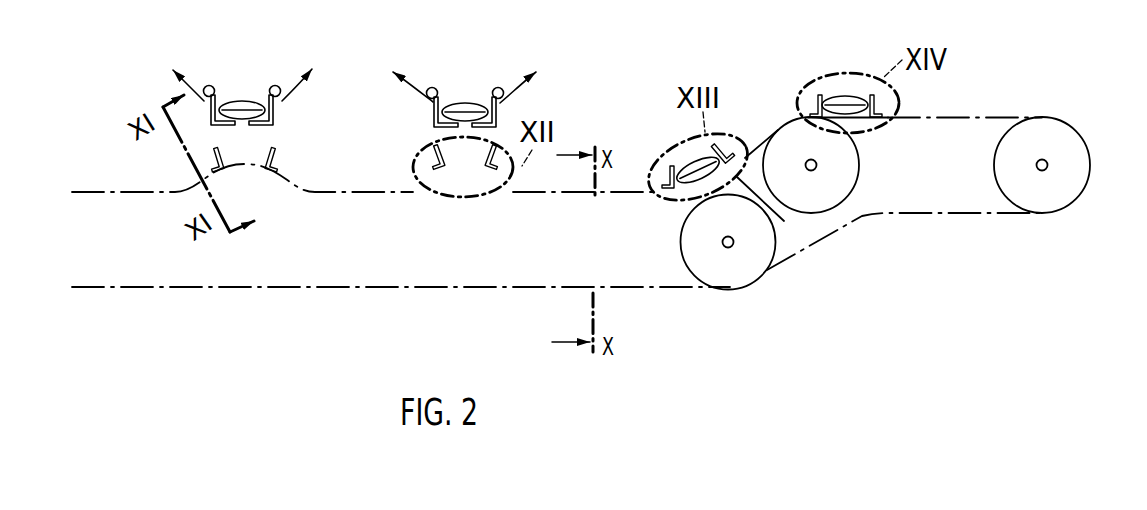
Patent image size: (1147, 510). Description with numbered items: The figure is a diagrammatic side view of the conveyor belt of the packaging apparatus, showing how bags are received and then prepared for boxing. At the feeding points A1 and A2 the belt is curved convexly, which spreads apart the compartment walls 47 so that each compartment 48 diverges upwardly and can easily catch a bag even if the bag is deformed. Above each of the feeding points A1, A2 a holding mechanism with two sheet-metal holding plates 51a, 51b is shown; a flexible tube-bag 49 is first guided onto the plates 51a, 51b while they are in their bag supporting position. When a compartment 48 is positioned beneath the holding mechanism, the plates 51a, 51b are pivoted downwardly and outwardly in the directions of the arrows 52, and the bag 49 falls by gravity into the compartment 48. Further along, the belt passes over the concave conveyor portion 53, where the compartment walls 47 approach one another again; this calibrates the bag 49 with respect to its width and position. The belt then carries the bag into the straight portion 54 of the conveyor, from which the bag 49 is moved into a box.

The compartment walls 47 is at (219, 157).
The compartment 48 is at (250, 152).
The tube-bag 49 is at (465, 108).
The sheet-metal holding plate 51a is at (450, 104).
The sheet-metal holding plate 51b is at (485, 106).
The arrows 52 is at (408, 91).
The concave conveyor portion 53 is at (772, 210).
The straight portion of the conveyor 54 is at (953, 116).
The feeding point A1 is at (293, 155).
The feeding point A2 is at (401, 136).